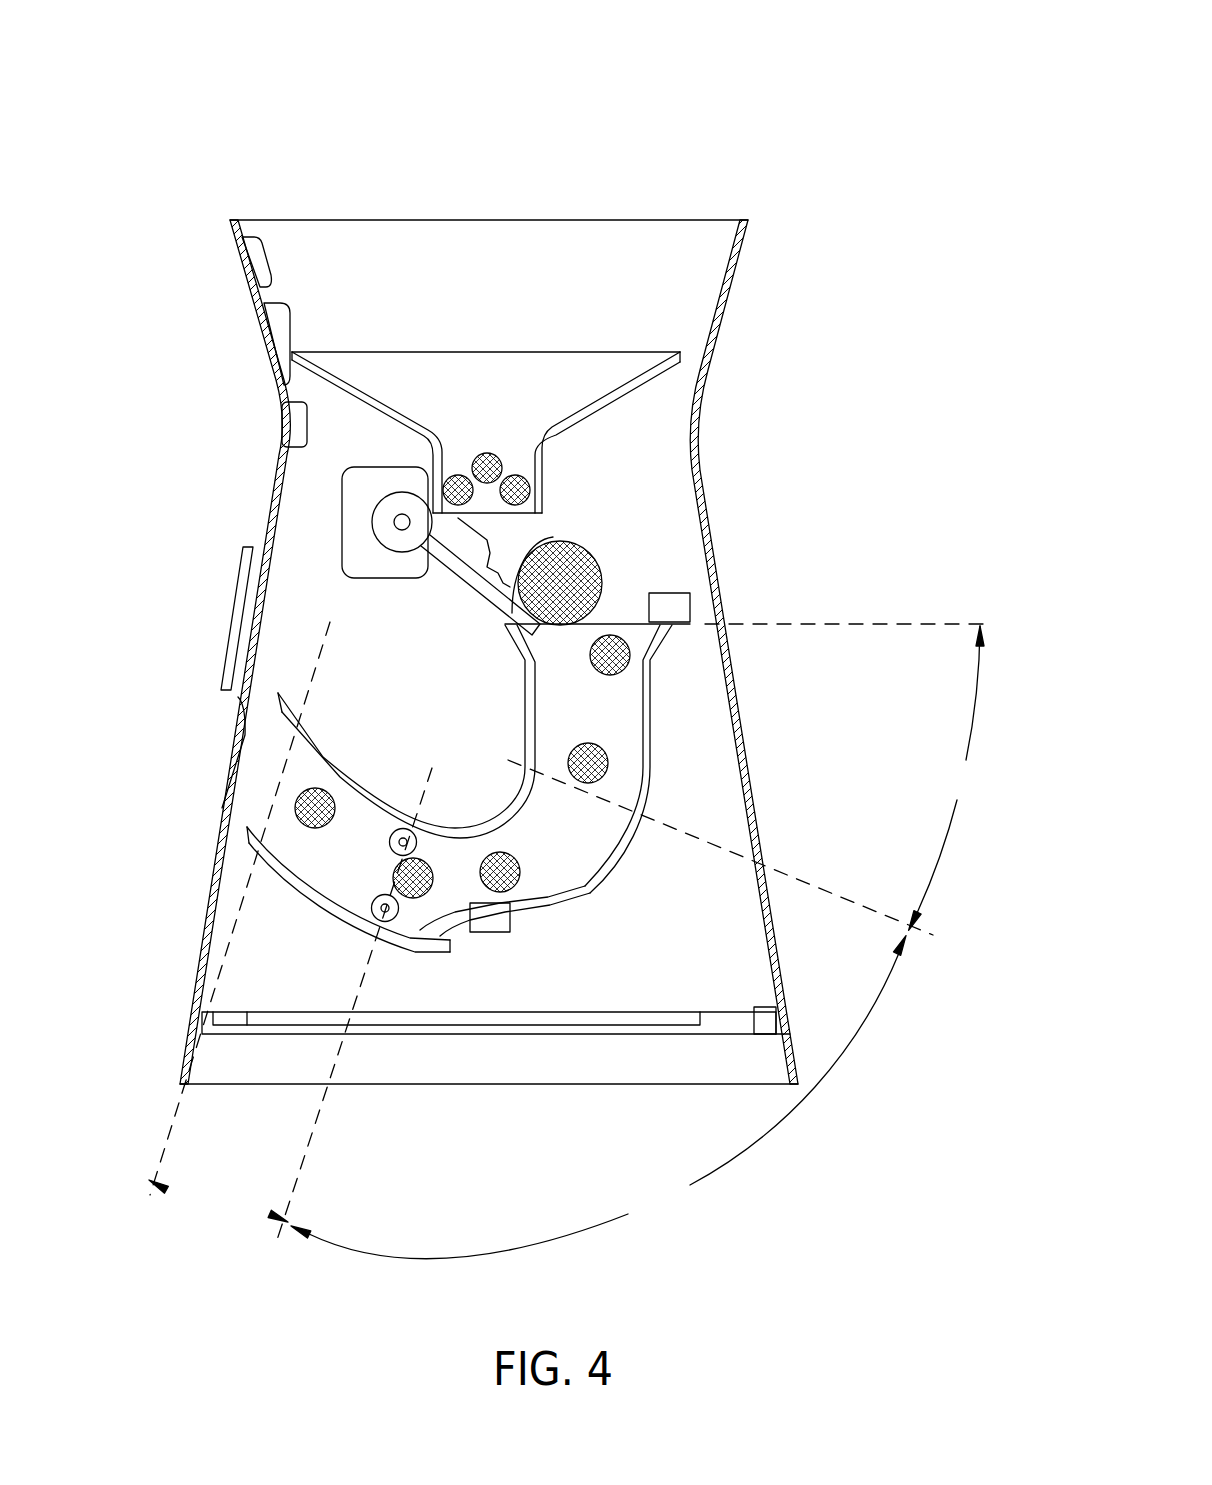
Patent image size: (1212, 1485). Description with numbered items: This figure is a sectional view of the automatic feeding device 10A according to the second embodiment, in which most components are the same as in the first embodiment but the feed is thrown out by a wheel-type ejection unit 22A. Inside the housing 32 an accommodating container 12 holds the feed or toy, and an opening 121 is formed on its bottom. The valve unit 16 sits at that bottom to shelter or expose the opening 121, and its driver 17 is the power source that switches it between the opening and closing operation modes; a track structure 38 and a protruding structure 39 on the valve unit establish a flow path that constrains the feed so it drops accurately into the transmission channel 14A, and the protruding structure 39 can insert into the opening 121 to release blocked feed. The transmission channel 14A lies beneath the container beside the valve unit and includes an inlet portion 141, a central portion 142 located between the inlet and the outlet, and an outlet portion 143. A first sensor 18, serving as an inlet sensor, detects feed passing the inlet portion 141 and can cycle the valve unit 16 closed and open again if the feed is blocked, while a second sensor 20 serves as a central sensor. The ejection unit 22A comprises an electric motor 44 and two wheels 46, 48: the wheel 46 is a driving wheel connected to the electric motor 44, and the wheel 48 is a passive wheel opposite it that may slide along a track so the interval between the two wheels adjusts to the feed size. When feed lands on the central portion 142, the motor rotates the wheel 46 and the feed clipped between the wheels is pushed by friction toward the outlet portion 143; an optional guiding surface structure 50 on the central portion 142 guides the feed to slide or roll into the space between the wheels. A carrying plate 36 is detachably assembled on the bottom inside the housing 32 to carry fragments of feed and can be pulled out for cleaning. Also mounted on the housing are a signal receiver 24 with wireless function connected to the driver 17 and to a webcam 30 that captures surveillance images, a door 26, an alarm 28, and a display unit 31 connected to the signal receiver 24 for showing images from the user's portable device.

The automatic feeding device 10A is at (888, 66).
The accommodating container 12 is at (648, 346).
The opening 121 is at (521, 490).
The transmission channel 14A is at (651, 730).
The inlet portion 141 is at (746, 779).
The central portion 142 is at (591, 1013).
The outlet portion 143 is at (270, 1214).
The valve unit 16 is at (553, 537).
The driver 17 is at (382, 526).
The first sensor 18 is at (690, 613).
The second sensor 20 is at (500, 925).
The ejection unit 22A is at (403, 947).
The signal receiver 24 is at (358, 490).
The door 26 is at (245, 576).
The alarm 28 is at (257, 263).
The webcam 30 is at (283, 416).
The display unit 31 is at (277, 345).
The housing 32 is at (742, 254).
The carrying plate 36 is at (664, 1012).
The track structure 38 is at (487, 575).
The protruding structure 39 is at (460, 540).
The electric motor 44 is at (386, 922).
The wheel 46 is at (393, 918).
The wheel 48 is at (403, 840).
The guiding surface structure 50 is at (543, 898).